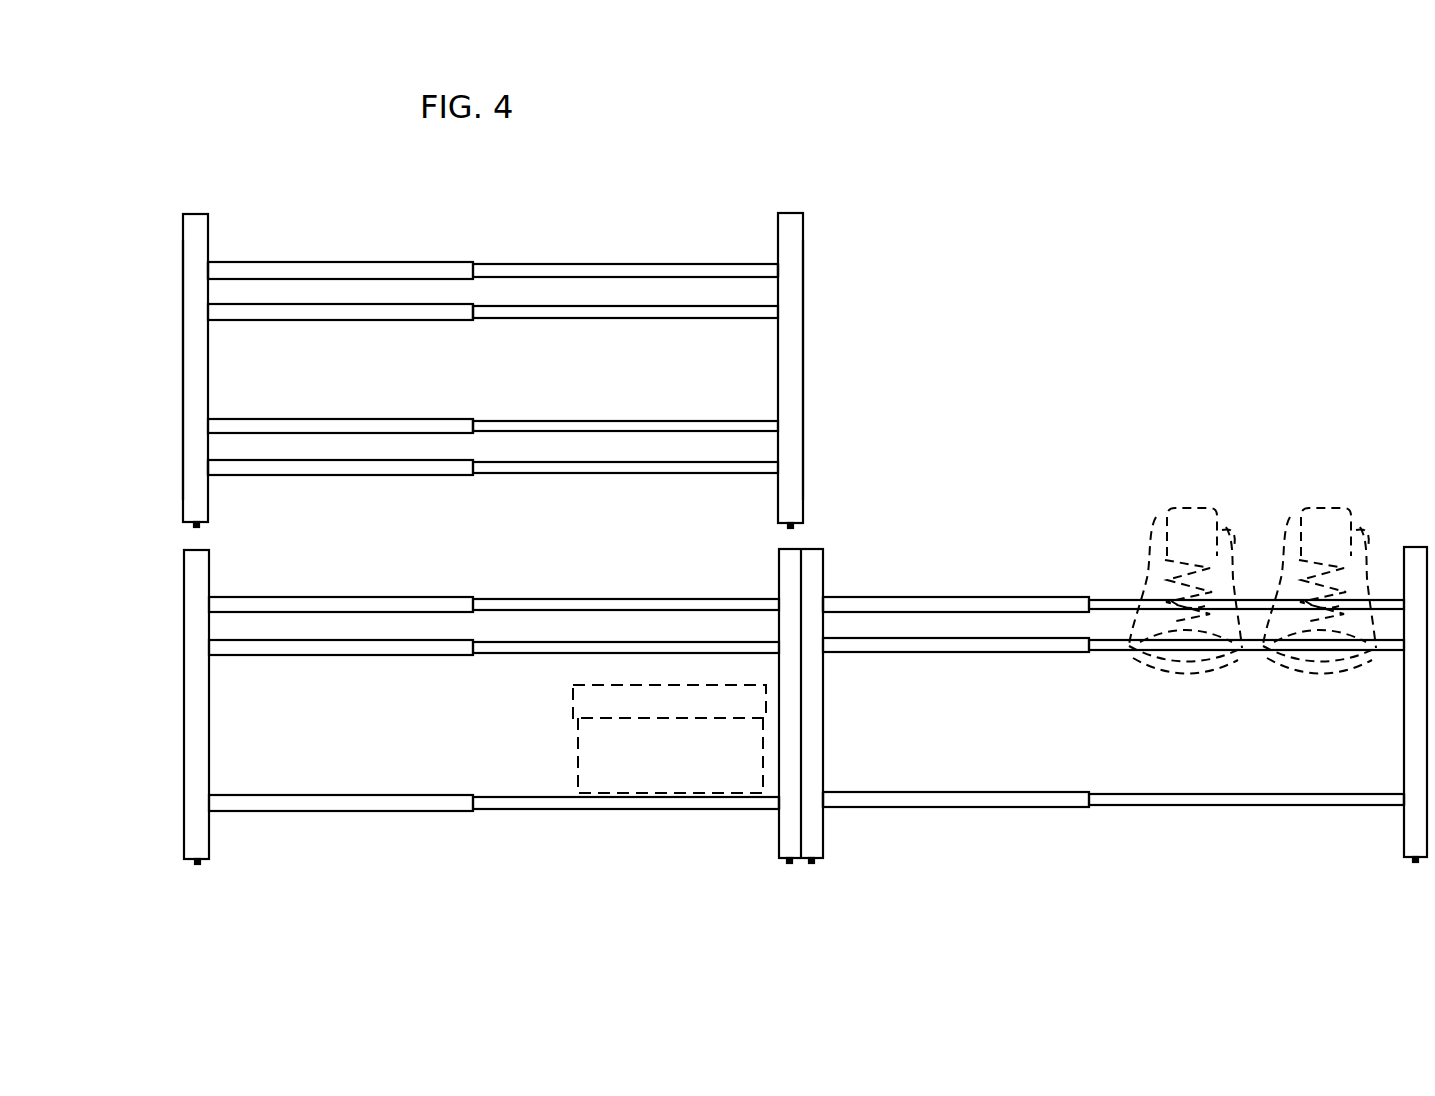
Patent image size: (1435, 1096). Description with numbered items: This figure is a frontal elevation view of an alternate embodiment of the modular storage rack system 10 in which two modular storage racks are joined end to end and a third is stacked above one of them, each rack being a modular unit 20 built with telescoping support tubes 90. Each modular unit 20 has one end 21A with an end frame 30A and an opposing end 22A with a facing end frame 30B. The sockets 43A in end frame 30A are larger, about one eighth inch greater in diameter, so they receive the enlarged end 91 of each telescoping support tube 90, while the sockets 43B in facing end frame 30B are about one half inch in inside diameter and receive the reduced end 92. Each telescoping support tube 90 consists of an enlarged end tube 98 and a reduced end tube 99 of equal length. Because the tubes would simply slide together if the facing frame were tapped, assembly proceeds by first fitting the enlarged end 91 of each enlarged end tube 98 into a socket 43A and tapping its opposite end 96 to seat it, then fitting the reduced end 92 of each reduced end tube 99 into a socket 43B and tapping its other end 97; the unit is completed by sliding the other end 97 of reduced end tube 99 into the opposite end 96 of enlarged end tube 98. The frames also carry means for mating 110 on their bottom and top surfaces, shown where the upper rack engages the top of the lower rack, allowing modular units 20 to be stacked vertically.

The modular storage rack system 10 is at (1266, 167).
The modular unit 20 is at (988, 294).
The one end 21A is at (183, 377).
The opposing end 22A is at (792, 372).
The end frame 30A is at (195, 293).
The facing end frame 30B is at (792, 226).
The sockets 43A is at (210, 262).
The sockets 43B is at (778, 262).
The telescoping support tube 90 is at (458, 476).
The enlarged end 91 is at (210, 477).
The reduced end 92 is at (777, 419).
The opposite end 96 is at (470, 419).
The other end 97 is at (478, 419).
The enlarged end tube 98 is at (318, 812).
The reduced end tube 99 is at (515, 810).
The means for mating 110 is at (831, 547).